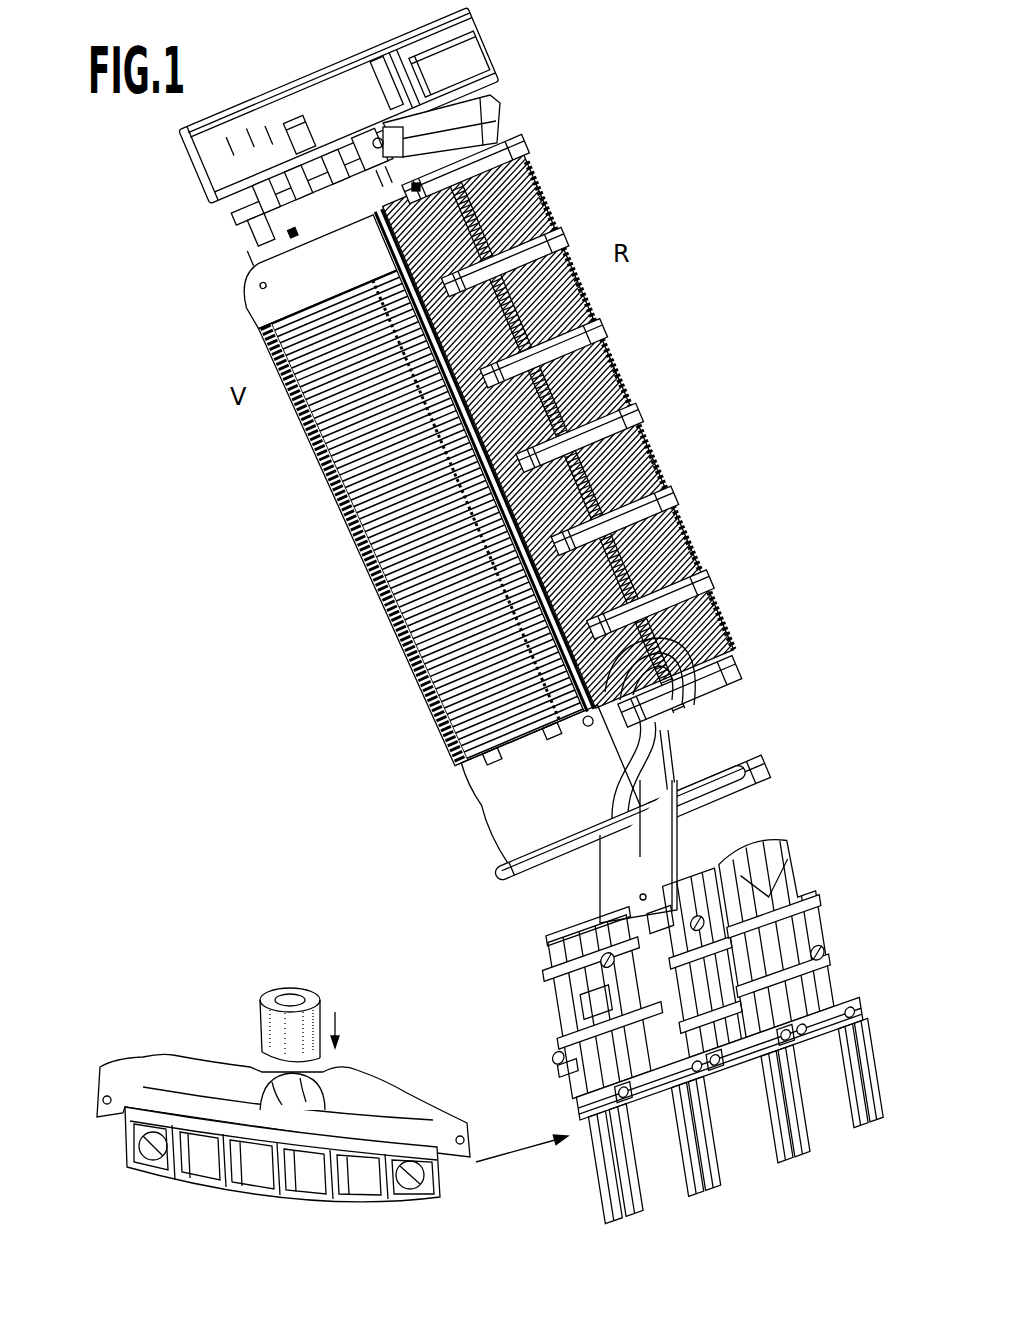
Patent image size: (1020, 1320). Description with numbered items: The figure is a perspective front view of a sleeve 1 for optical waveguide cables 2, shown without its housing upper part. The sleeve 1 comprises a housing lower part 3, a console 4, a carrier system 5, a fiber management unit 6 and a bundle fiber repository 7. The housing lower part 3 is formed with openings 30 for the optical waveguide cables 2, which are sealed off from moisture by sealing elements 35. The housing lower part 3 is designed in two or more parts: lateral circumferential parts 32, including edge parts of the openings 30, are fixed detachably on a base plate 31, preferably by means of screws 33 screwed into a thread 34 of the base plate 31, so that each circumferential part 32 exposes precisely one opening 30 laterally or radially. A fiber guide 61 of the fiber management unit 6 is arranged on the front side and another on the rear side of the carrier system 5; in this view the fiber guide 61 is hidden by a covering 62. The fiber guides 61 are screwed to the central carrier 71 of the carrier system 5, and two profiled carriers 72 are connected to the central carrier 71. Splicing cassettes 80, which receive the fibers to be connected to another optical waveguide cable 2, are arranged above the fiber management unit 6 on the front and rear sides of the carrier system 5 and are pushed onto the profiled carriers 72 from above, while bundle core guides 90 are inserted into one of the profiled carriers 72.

The sleeve 1 is at (655, 318).
The optical waveguide cables 2 is at (630, 1193).
The housing lower part 3 is at (860, 1012).
The console 4 is at (762, 868).
The carrier system 5 is at (700, 851).
The fiber management unit 6 is at (460, 827).
The bundle fiber repository 7 is at (525, 40).
The openings 30 is at (255, 1057).
The base plate 31 is at (158, 1060).
The circumferential parts 32 is at (222, 1196).
The screws 33 is at (147, 1166).
The thread 34 is at (107, 1105).
The sealing elements 35 is at (335, 987).
The fiber guide 61 is at (700, 722).
The covering 62 is at (500, 866).
The central carrier 71 is at (622, 870).
The profiled carriers 72 is at (680, 772).
The splicing cassettes 80 is at (370, 540).
The bundle core guides 90 is at (640, 427).